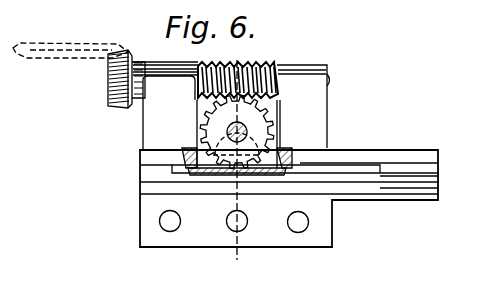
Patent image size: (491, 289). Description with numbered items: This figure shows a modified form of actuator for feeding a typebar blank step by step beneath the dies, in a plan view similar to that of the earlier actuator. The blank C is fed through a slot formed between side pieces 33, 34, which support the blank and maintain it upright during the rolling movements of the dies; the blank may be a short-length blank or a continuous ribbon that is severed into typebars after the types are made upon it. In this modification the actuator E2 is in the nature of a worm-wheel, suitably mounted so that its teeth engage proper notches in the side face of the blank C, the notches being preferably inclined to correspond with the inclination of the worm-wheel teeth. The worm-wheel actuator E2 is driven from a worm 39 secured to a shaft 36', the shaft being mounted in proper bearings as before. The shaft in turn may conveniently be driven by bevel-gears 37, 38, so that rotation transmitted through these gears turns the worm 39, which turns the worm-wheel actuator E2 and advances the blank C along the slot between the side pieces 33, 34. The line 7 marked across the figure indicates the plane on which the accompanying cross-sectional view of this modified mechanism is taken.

The bevel-gear 38 is at (58, 60).
The bevel-gear 37 is at (112, 104).
The actuator E2 is at (165, 59).
The section line 7 is at (238, 163).
The worm 39 is at (263, 67).
The shaft 36' is at (323, 106).
The blank C is at (345, 172).
The side piece 34 is at (398, 165).
The side piece 33 is at (405, 182).